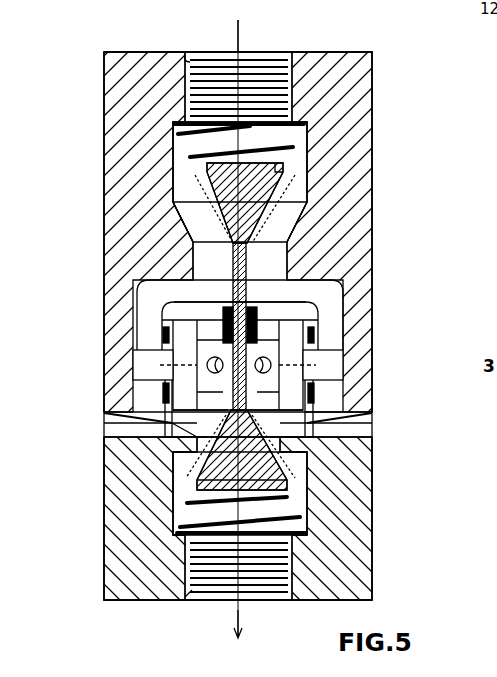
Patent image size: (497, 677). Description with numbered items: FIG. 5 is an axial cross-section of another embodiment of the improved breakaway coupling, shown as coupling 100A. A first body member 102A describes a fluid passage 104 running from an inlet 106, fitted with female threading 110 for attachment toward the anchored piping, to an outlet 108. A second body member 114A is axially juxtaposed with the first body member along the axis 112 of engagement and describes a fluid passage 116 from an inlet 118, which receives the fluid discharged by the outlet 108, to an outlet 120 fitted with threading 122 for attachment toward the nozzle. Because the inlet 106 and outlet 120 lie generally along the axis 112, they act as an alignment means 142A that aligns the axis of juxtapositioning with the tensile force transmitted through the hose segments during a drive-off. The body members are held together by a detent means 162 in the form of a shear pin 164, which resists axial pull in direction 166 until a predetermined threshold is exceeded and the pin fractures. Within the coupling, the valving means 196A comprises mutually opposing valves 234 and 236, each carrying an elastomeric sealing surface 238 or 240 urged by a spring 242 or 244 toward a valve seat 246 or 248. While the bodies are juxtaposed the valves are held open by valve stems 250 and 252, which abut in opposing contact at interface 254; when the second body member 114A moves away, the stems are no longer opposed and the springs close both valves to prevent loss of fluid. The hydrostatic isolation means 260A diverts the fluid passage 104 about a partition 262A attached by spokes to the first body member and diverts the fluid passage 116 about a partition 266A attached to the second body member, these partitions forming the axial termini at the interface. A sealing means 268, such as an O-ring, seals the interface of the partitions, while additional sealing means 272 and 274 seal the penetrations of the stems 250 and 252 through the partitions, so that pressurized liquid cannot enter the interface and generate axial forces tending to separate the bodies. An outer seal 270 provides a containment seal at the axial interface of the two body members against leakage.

The valve assembly 100A is at (383, 70).
The first body member 102A is at (340, 128).
The fluid passage 104 is at (297, 162).
The inlet 106 is at (274, 54).
The outlet 108 is at (343, 378).
The threading 110 is at (185, 54).
The axis 112 is at (372, 464).
The second body member 114A is at (372, 541).
The fluid passage 116 is at (372, 488).
The inlet 118 is at (343, 360).
The outlet 120 is at (265, 604).
The threading 122 is at (188, 596).
The alignment means 142A is at (317, 40).
The detent means 162 is at (374, 411).
The shear pin 164 is at (372, 433).
The direction 166 is at (236, 624).
The valving means 196A is at (126, 221).
The valve 234 is at (192, 187).
The valve 236 is at (200, 484).
The sealing surface 238 is at (188, 157).
The sealing surface 240 is at (186, 503).
The spring 242 is at (174, 128).
The spring 244 is at (178, 528).
The valve seat 246 is at (192, 240).
The valve seat 248 is at (175, 433).
The valve stem 250 is at (232, 260).
The valve stem 252 is at (173, 416).
The interface 254 is at (314, 332).
The hydrostatic isolation means 260A is at (127, 328).
The partition 262A is at (145, 283).
The partition 266A is at (133, 362).
The sealing means 268 is at (162, 304).
The outer seal 270 is at (172, 392).
The sealing means 272 is at (257, 313).
The sealing means 274 is at (315, 362).